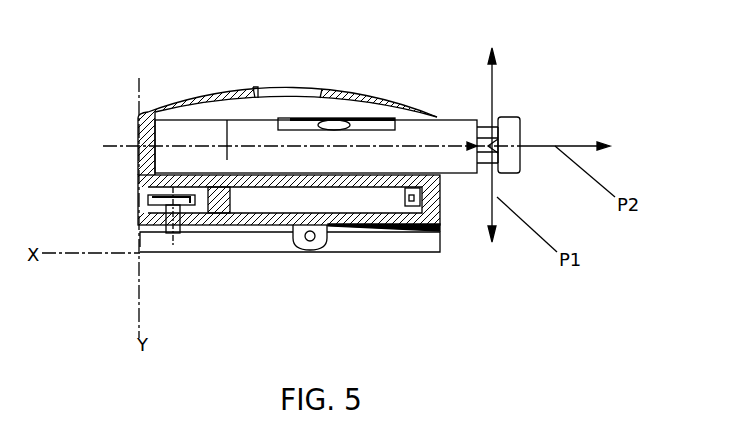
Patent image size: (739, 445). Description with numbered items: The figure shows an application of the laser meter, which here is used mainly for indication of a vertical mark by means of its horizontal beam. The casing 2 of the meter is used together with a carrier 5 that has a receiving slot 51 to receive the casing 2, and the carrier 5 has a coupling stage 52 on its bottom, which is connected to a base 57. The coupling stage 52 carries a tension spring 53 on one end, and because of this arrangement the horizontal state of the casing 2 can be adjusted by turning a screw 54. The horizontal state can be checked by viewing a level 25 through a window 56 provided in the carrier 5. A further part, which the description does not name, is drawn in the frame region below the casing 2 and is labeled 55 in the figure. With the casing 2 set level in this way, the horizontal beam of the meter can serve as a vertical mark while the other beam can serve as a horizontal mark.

The casing 2 is at (422, 133).
The carrier 5 is at (208, 92).
The level 25 is at (366, 120).
The receiving slot 51 is at (167, 135).
The coupling stage 52 is at (311, 242).
The tension spring 53 is at (402, 227).
The screw 54 is at (153, 200).
The guide slot frame 55 is at (337, 205).
The window 56 is at (287, 92).
The base 57 is at (245, 243).